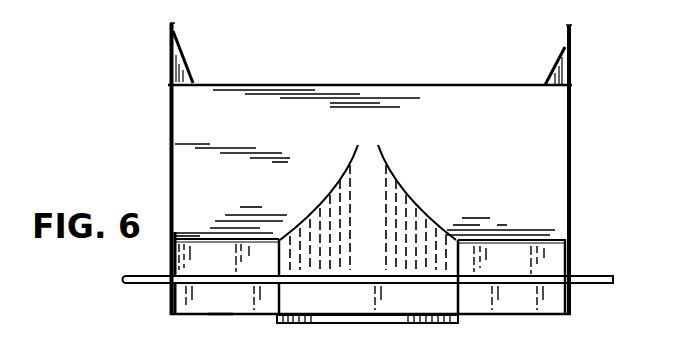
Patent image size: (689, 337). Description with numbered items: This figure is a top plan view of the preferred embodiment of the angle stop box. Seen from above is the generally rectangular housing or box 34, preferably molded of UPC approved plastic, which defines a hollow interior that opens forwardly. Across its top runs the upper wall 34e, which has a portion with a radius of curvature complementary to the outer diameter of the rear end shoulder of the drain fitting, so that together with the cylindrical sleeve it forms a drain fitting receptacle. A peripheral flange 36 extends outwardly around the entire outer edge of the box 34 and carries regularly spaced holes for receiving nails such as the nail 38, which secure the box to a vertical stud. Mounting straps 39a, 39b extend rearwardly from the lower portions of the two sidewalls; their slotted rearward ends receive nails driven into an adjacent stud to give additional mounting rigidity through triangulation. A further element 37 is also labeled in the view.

The housing or box 34 is at (570, 133).
The upper wall 34e is at (505, 159).
The peripheral flange 36 is at (152, 283).
The lower member 37 is at (221, 325).
The nail 38 is at (458, 323).
The mounting strap 39a is at (176, 33).
The mounting strap 39b is at (564, 47).